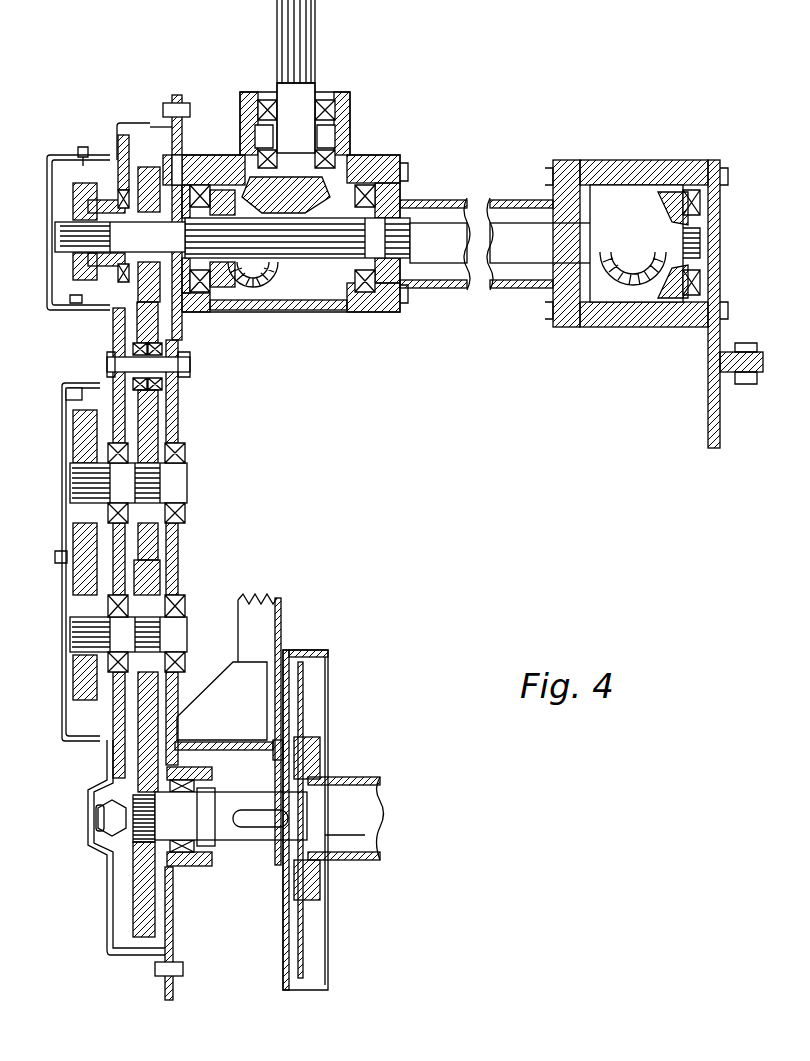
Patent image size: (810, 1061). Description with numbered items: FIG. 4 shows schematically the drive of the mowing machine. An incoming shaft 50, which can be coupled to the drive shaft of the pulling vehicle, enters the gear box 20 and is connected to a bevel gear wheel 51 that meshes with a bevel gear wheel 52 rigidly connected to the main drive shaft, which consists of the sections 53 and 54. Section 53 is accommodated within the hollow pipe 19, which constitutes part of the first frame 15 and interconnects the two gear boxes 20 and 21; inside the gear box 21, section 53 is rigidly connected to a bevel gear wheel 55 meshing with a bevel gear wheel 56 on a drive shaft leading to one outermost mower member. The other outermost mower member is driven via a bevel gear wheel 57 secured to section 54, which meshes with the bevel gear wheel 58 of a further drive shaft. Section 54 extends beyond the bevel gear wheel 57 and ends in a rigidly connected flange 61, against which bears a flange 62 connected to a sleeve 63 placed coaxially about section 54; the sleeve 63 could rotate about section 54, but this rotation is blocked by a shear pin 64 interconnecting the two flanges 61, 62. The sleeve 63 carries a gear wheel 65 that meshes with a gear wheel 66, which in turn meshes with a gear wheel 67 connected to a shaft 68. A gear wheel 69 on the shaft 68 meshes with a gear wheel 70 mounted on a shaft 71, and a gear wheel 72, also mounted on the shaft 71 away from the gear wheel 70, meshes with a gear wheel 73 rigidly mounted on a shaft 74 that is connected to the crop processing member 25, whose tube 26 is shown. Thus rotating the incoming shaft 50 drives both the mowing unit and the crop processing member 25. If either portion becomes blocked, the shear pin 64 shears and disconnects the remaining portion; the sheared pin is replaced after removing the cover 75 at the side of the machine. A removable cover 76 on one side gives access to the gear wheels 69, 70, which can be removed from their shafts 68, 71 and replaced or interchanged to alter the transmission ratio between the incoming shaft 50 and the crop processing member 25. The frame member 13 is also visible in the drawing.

The frame member 13 is at (284, 606).
The first frame 15 is at (176, 928).
The hollow pipe 19 is at (472, 200).
The gear box 20 is at (345, 314).
The gear box 21 is at (641, 170).
The crop processing member 25 is at (370, 772).
The tube 26 is at (372, 838).
The incoming shaft 50 is at (312, 46).
The bevel gear wheel 51 is at (300, 177).
The bevel gear wheel 52 is at (335, 300).
The main drive shaft section 53 is at (445, 265).
The main drive shaft section 54 is at (300, 246).
The bevel gear wheel 55 is at (662, 206).
The bevel gear wheel 56 is at (633, 287).
The bevel gear wheel 57 is at (226, 290).
The bevel gear wheel 58 is at (262, 288).
The flange 61 is at (66, 195).
The flange 62 is at (98, 190).
The sleeve 63 is at (122, 247).
The shear pin 64 is at (72, 299).
The gear wheel 65 is at (148, 167).
The gear wheel 66 is at (140, 326).
The gear wheel 67 is at (160, 546).
The shaft 68 is at (180, 484).
The gear wheel 69 is at (80, 425).
The gear wheel 70 is at (80, 695).
The shaft 71 is at (178, 638).
The gear wheel 72 is at (160, 578).
The gear wheel 73 is at (140, 896).
The shaft 74 is at (255, 846).
The cover 75 is at (80, 147).
The removable cover 76 is at (63, 598).